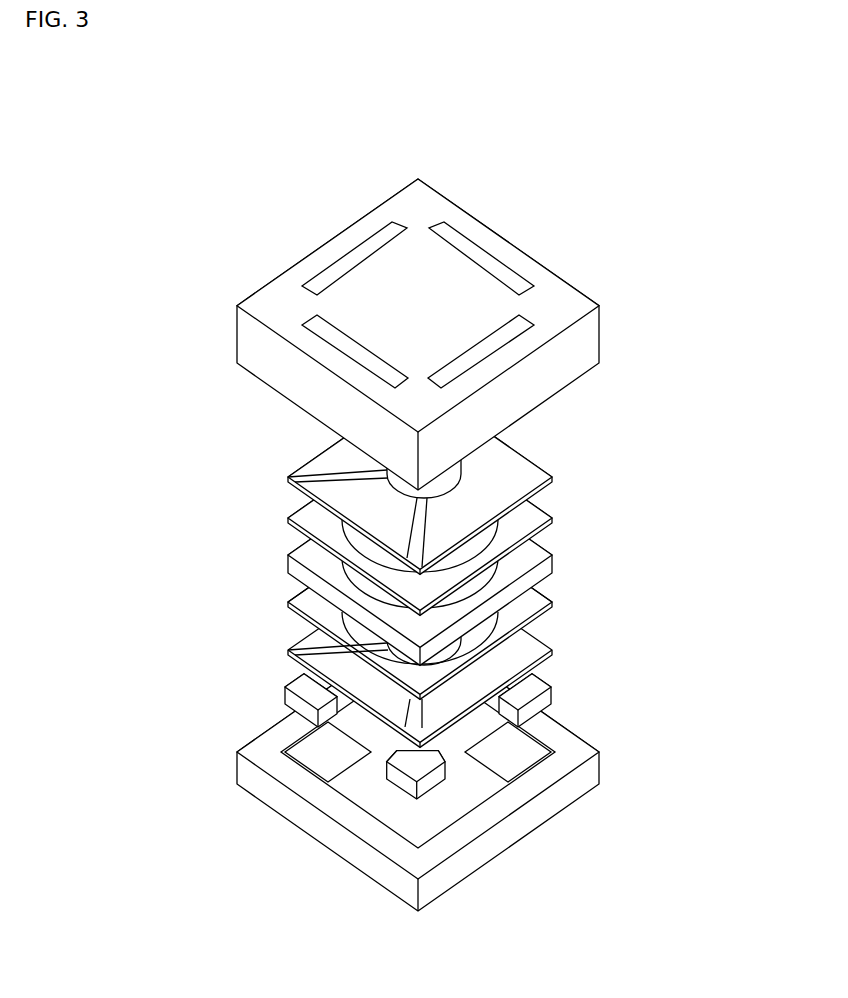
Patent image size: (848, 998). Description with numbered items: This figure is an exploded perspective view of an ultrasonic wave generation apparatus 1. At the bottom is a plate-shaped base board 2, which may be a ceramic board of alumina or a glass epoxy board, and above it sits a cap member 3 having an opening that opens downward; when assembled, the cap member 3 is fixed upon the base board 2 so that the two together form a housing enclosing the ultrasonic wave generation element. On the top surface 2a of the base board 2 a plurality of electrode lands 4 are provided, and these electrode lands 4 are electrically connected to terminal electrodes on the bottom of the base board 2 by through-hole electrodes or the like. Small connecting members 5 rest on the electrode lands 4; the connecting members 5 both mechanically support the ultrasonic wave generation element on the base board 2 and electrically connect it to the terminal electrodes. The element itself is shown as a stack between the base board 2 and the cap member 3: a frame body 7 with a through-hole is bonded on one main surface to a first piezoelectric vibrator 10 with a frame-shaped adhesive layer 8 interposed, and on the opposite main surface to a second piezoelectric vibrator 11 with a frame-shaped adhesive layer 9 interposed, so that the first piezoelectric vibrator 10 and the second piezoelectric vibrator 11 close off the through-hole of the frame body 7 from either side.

The ultrasonic wave generation apparatus 1 is at (280, 235).
The base board 2 is at (480, 873).
The top surface 2a is at (342, 782).
The cap member 3 is at (357, 220).
The electrode lands 4 is at (350, 813).
The connecting members 5 is at (290, 682).
The frame body 7 is at (297, 552).
The frame-shaped adhesive layer 8 is at (297, 512).
The frame-shaped adhesive layer 9 is at (297, 603).
The first piezoelectric vibrator 10 is at (313, 463).
The second piezoelectric vibrator 11 is at (543, 640).